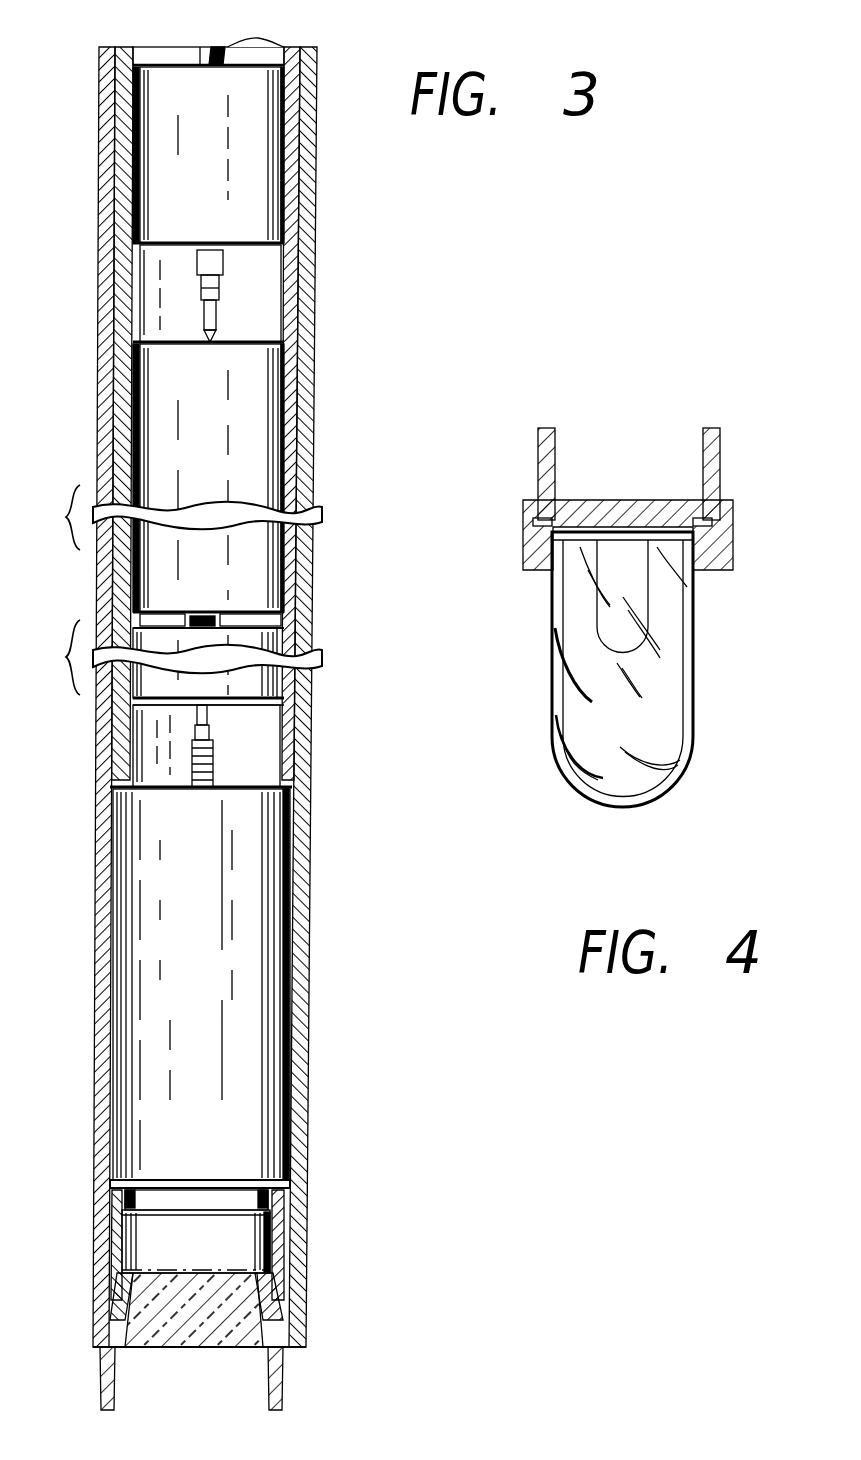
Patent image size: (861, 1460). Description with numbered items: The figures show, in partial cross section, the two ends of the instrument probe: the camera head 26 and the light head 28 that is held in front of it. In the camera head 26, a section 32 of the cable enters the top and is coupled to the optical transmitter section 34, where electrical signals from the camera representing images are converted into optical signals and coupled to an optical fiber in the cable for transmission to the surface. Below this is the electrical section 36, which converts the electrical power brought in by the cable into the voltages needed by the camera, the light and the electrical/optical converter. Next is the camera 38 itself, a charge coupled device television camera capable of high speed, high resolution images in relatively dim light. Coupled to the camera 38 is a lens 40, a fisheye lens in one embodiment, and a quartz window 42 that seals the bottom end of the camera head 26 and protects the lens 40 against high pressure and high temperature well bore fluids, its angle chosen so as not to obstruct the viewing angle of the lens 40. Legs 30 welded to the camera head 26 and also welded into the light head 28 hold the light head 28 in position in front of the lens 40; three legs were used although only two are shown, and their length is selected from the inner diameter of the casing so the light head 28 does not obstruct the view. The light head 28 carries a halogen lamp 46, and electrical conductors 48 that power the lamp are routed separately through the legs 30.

In FIG. 3, the camera head 26 is at (340, 729).
In FIG. 4, the light head 28 is at (677, 787).
In FIG. 3, the legs 30 is at (100, 1378).
In FIG. 4, the legs 30 is at (538, 452).
In FIG. 3, the section of the cable 32 is at (213, 47).
In FIG. 3, the optical transmitter section 34 is at (223, 182).
In FIG. 3, the electrical section 36 is at (207, 425).
In FIG. 3, the camera 38 is at (208, 928).
In FIG. 3, the lens 40 is at (205, 1242).
In FIG. 3, the quartz window 42 is at (180, 1349).
In FIG. 4, the halogen lamp 46 is at (648, 617).
In FIG. 3, the electrical conductors 48 is at (98, 1305).
In FIG. 4, the electrical conductors 48 is at (733, 520).